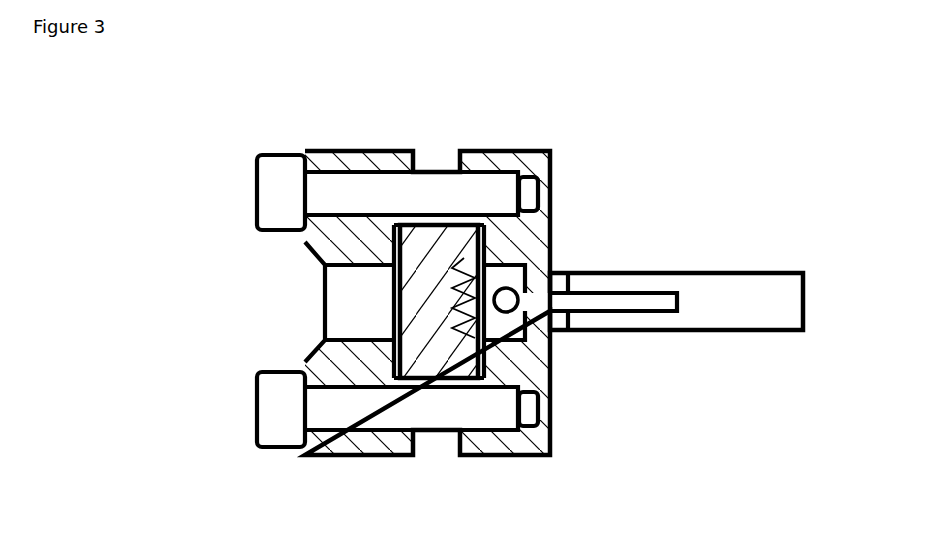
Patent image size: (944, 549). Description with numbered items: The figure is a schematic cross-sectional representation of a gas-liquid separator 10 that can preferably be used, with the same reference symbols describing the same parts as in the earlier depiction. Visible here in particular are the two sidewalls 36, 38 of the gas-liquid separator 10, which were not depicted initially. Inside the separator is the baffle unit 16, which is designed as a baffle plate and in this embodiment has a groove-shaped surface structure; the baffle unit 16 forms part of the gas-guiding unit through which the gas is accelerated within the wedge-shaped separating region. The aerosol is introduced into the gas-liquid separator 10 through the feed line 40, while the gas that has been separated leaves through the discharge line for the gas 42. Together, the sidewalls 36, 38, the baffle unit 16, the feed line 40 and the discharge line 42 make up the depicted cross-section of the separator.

The gas-liquid separator 10 is at (217, 318).
The baffle unit 16 is at (468, 298).
The sidewall 36 is at (472, 382).
The sidewall 38 is at (478, 214).
The feed line 40 is at (621, 301).
The discharge line for the gas 42 is at (677, 266).